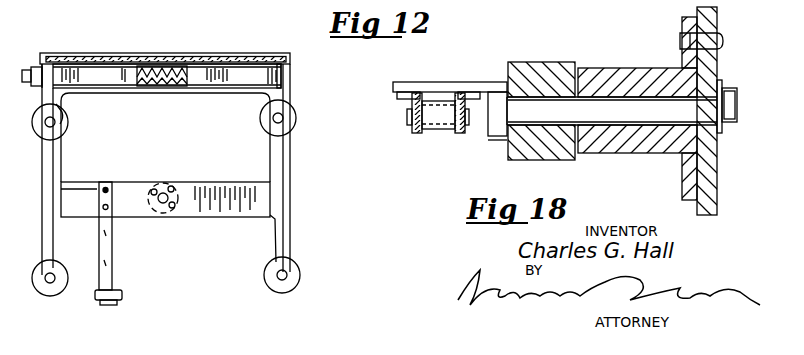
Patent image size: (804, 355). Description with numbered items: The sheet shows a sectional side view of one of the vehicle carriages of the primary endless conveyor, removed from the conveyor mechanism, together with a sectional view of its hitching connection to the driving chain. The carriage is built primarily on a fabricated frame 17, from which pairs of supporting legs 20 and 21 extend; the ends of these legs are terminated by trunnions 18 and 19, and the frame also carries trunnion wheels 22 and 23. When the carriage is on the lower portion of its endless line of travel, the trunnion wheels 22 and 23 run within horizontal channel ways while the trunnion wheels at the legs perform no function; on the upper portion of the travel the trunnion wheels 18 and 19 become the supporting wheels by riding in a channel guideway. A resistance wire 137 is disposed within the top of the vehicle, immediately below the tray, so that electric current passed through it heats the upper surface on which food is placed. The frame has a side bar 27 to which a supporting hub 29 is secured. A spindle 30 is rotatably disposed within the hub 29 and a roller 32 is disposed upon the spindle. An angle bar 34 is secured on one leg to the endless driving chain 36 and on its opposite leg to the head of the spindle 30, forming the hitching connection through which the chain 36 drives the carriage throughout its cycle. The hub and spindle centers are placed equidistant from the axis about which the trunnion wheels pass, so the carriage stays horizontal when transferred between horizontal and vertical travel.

In FIG. 12, the resistance wire 137 is at (152, 67).
In FIG. 12, the fabricated frame 17 is at (192, 94).
In FIG. 12, the trunnion 18 is at (50, 294).
In FIG. 12, the trunnion 19 is at (300, 276).
In FIG. 12, the supporting leg 20 is at (52, 229).
In FIG. 12, the supporting leg 21 is at (284, 232).
In FIG. 12, the trunnion wheel 22 is at (36, 126).
In FIG. 12, the trunnion wheel 23 is at (294, 120).
In FIG. 12, the side bar 27 is at (140, 186).
In FIG. 18, the supporting hub 29 is at (634, 68).
In FIG. 12, the spindle 30 is at (170, 190).
In FIG. 18, the spindle 30 is at (575, 106).
In FIG. 18, the roller 32 is at (533, 64).
In FIG. 18, the angle bar 34 is at (436, 82).
In FIG. 18, the endless driving chain 36 is at (432, 133).